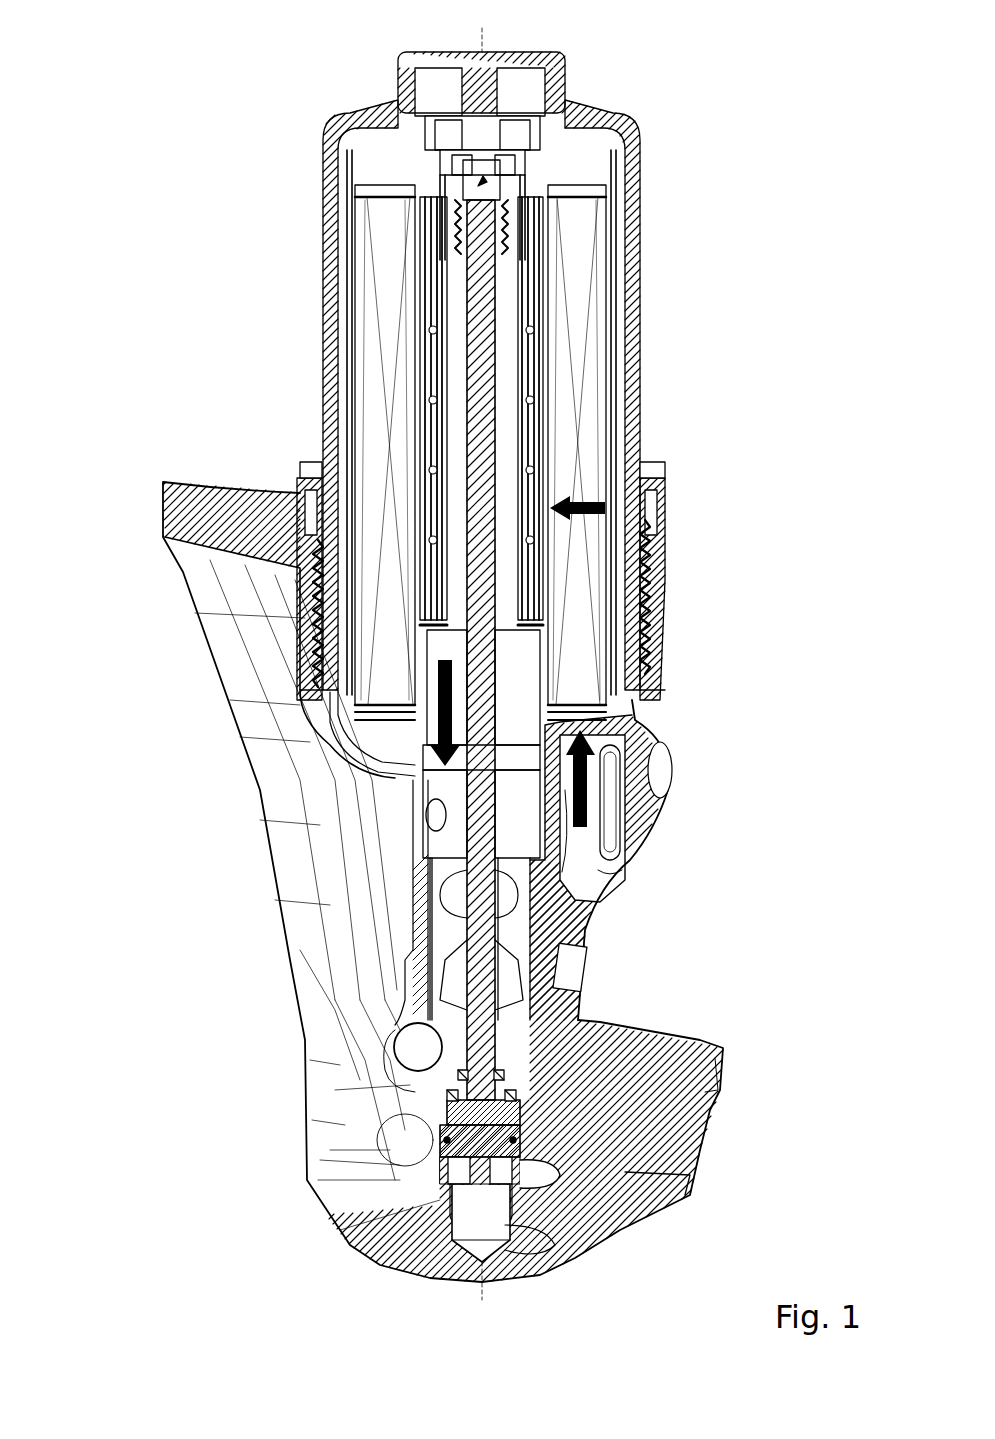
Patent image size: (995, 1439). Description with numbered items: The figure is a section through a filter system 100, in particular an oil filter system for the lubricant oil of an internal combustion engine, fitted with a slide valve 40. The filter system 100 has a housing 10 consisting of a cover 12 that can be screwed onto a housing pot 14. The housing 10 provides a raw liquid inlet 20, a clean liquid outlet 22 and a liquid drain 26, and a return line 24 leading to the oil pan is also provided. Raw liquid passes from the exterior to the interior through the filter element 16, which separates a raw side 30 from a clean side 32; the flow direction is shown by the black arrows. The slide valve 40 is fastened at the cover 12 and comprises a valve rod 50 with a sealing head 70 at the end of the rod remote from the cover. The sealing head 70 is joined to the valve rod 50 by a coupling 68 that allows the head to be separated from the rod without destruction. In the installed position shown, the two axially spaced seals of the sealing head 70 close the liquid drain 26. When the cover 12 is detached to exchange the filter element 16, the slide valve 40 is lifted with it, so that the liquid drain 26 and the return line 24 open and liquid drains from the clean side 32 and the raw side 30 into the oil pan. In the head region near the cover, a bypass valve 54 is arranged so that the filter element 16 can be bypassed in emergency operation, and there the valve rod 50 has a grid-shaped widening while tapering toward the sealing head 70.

The filter system 100 is at (186, 156).
The housing 10 is at (163, 537).
The cover 12 is at (656, 245).
The bypass valve 54 is at (506, 127).
The filter element 16 is at (597, 398).
The valve rod 50 is at (490, 473).
The slide valve 40 is at (493, 358).
The housing pot 14 is at (668, 538).
The clean side 32 is at (520, 685).
The raw side 30 is at (588, 752).
The raw liquid inlet 20 is at (578, 873).
The clean liquid outlet 22 is at (418, 1047).
The coupling 68 is at (527, 1078).
The sealing head 70 is at (460, 1156).
The liquid drain 26 is at (562, 1180).
The return line 24 is at (520, 1240).